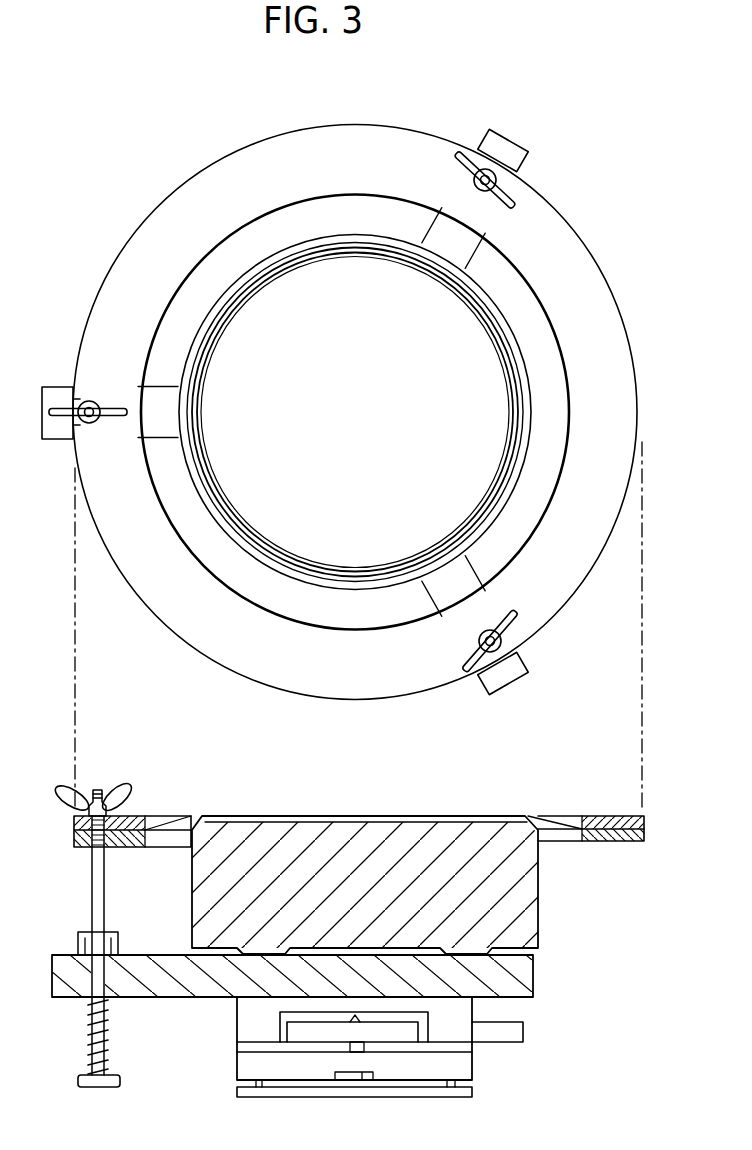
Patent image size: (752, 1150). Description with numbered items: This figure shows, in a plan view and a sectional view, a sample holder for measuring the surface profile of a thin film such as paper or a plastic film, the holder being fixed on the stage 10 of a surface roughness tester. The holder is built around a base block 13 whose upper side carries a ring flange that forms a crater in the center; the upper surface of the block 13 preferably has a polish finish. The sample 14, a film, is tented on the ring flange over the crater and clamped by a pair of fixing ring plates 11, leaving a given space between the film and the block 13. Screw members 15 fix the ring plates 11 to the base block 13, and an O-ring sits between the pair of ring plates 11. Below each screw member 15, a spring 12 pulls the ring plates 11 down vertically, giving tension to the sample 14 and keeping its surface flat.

The stage 10 is at (475, 1072).
The fixing ring plates 11 is at (178, 775).
The spring 12 is at (106, 1034).
The base block 13 is at (517, 898).
The sample 14 is at (553, 816).
The screw members 15 is at (63, 791).